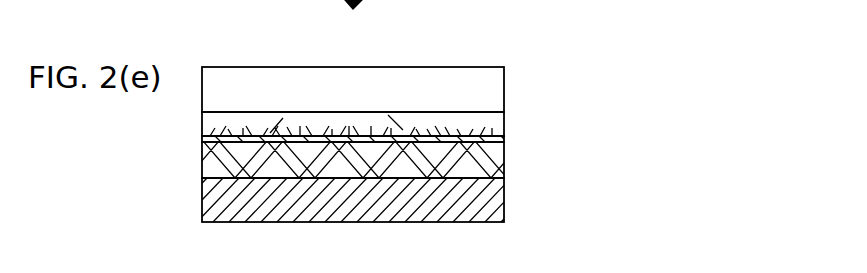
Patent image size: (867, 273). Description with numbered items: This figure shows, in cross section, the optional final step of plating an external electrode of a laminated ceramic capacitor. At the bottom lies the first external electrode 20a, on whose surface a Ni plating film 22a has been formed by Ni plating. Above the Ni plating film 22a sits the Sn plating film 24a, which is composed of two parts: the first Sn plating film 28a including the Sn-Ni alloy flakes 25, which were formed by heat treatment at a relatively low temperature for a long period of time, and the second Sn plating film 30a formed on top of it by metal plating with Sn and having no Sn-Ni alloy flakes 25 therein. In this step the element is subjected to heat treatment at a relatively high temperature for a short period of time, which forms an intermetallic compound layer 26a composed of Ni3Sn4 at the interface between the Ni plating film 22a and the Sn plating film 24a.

The first external electrode 20a is at (492, 197).
The Ni plating film 22a is at (492, 160).
The intermetallic compound layer 26a is at (500, 137).
The first Sn plating film 28a is at (493, 118).
The second Sn plating film 30a is at (492, 85).
The Sn plating film 24a is at (502, 98).
The Sn-Ni alloy flakes 25 is at (401, 128).